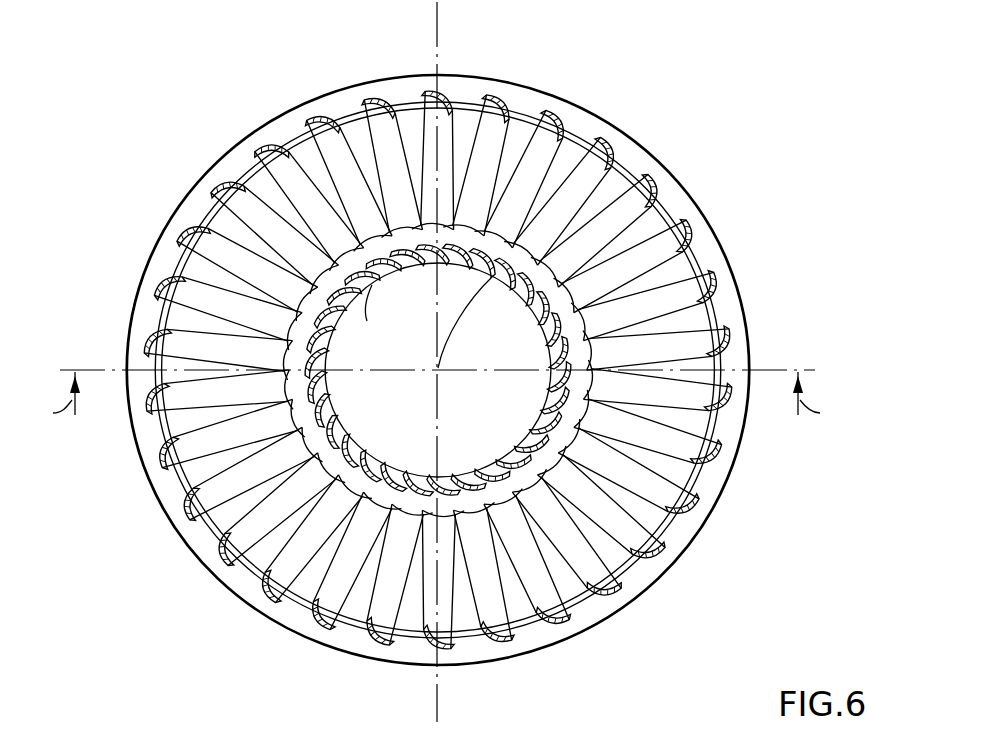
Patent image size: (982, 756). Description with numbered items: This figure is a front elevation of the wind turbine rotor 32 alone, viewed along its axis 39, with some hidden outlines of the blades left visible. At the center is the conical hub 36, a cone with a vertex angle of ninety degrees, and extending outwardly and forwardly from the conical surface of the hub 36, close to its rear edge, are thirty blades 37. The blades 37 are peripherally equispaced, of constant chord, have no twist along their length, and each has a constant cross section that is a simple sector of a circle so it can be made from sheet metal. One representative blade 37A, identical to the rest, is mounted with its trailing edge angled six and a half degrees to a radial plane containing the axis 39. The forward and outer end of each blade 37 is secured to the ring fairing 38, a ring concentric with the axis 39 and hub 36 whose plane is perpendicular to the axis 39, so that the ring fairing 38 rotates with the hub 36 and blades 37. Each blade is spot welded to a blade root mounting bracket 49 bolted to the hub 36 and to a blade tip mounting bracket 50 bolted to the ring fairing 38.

The rotor 32 is at (436, 362).
The conical hub 36 is at (298, 180).
The blades 37 is at (379, 175).
The blade 37A is at (158, 326).
The ring fairing 38 is at (527, 100).
The axis 39 is at (540, 265).
The blade root mounting bracket 49 is at (162, 292).
The blade tip mounting bracket 50 is at (155, 338).